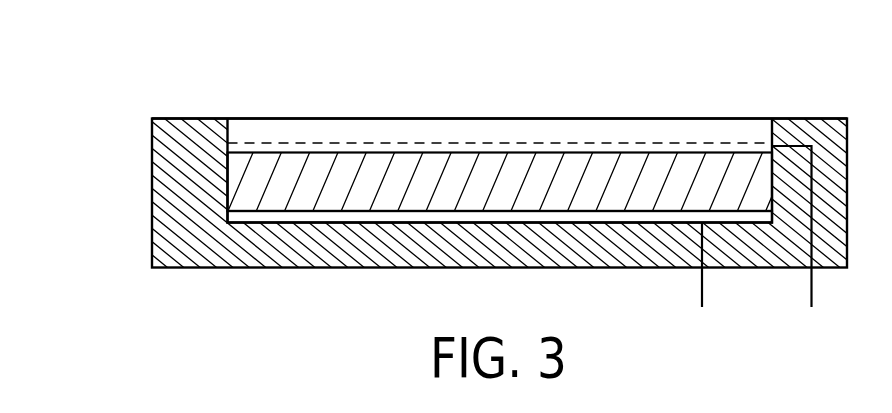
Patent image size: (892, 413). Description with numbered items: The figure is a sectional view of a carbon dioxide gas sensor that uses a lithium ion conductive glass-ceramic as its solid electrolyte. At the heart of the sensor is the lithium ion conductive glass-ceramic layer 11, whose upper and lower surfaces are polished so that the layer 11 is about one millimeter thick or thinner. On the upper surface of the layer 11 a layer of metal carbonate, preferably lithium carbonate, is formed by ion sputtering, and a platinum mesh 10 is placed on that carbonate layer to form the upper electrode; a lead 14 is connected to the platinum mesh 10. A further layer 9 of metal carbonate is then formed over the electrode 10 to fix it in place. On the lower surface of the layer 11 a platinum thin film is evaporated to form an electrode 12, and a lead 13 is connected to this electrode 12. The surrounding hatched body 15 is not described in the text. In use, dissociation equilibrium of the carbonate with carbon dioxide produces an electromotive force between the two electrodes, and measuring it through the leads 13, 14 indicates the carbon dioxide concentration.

The layer of metal carbonate 9 is at (355, 128).
The platinum mesh 10 is at (495, 140).
The lithium ion conductive glass-ceramic layer 11 is at (603, 173).
The electrode 12 is at (678, 218).
The lead 13 is at (701, 282).
The lead 14 is at (808, 283).
The frame 15 is at (187, 128).